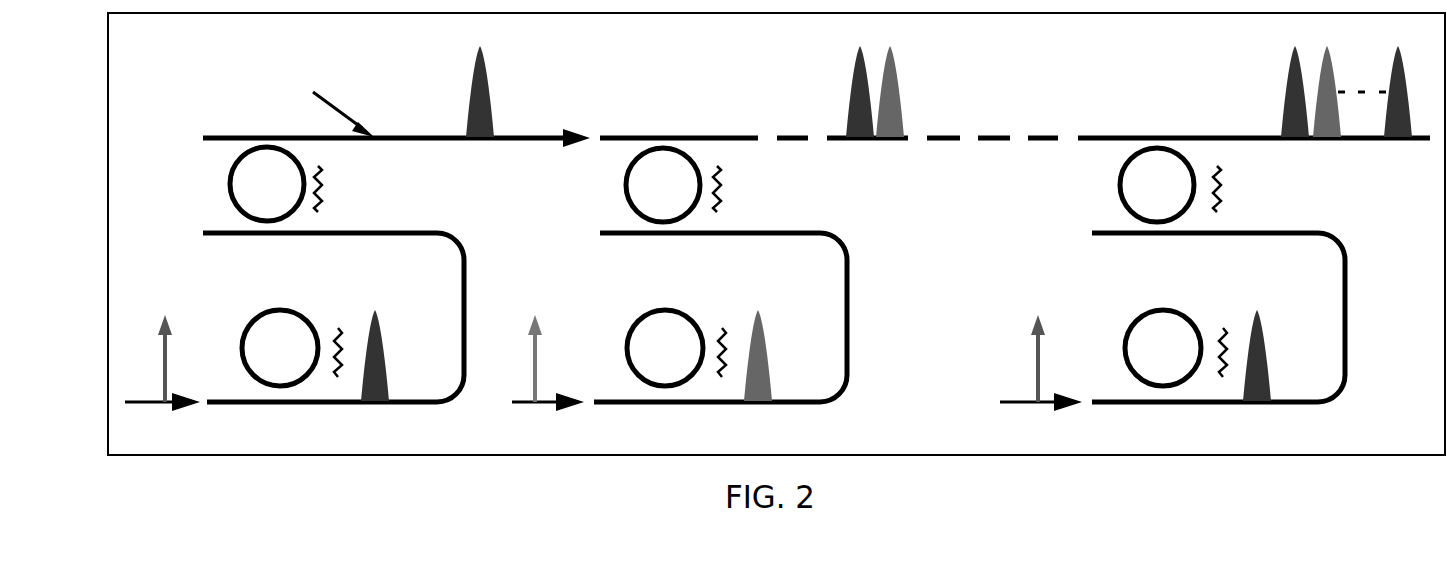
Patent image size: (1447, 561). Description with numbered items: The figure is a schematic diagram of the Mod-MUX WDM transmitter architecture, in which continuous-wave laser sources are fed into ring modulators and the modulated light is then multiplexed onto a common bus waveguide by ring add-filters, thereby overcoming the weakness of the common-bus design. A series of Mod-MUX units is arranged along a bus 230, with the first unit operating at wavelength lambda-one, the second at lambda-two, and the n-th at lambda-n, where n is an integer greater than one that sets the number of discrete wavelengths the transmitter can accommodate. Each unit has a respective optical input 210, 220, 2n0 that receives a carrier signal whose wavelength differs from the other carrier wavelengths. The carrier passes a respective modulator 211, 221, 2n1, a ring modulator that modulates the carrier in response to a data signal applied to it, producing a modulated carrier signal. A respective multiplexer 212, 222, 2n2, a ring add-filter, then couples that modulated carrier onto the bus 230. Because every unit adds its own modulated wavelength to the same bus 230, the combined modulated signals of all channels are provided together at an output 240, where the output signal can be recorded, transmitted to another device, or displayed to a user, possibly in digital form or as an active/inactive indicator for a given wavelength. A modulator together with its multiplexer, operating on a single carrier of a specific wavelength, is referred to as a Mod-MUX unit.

The bus 230 is at (630, 96).
The output 240 is at (1254, 138).
The optical input 210 is at (294, 333).
The modulator 211 is at (317, 323).
The multiplexer 212 is at (321, 184).
The optical input 220 is at (667, 333).
The modulator 221 is at (699, 323).
The multiplexer 222 is at (720, 185).
The optical input 2n0 is at (1145, 333).
The modulator 2n1 is at (1199, 323).
The multiplexer 2n2 is at (1083, 185).